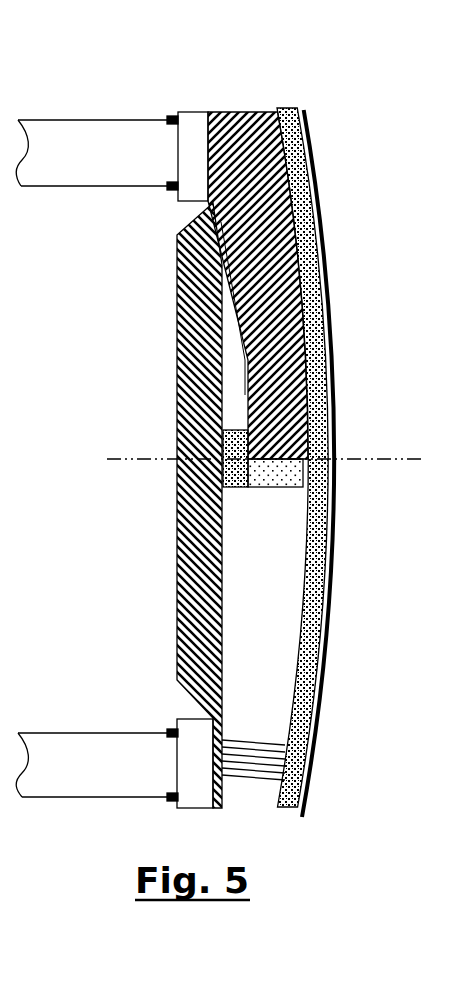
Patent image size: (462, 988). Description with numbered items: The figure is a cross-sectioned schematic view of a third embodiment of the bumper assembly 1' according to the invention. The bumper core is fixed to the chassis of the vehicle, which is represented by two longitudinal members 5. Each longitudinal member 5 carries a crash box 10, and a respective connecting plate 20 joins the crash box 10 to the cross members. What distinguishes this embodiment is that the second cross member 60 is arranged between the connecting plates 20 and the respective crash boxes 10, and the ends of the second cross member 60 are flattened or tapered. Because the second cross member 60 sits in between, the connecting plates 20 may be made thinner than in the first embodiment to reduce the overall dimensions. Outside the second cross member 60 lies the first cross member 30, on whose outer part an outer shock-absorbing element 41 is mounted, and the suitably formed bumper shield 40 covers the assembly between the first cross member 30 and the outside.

The bumper assembly 1' is at (225, 453).
The longitudinal members 5 is at (76, 163).
The crash boxes 10 is at (253, 731).
The connecting plates 20 is at (203, 127).
The first cross member 30 is at (277, 110).
The bumper shield 40 is at (327, 293).
The outer shock-absorbing element 41 is at (314, 153).
The second cross member 60 is at (177, 268).